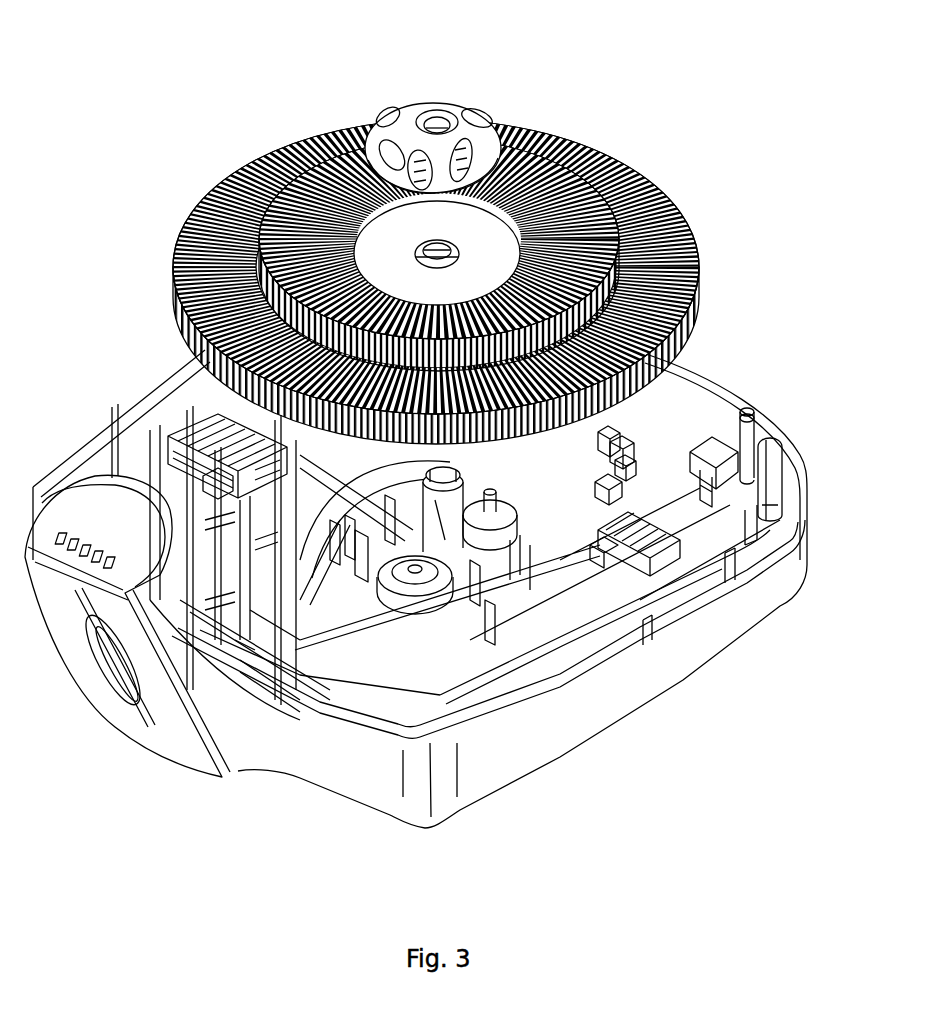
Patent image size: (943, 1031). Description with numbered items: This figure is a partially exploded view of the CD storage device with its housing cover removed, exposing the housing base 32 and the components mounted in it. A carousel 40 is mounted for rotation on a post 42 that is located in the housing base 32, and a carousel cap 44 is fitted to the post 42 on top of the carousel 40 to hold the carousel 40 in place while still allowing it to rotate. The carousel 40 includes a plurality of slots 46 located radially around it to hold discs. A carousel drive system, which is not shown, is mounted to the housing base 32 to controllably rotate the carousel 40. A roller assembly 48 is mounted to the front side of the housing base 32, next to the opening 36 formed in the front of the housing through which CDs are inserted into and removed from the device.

The housing base 32 is at (683, 680).
The opening 36 is at (100, 667).
The carousel 40 is at (429, 233).
The post 42 is at (457, 542).
The carousel cap 44 is at (474, 110).
The slots 46 is at (176, 262).
The roller assembly 48 is at (166, 398).